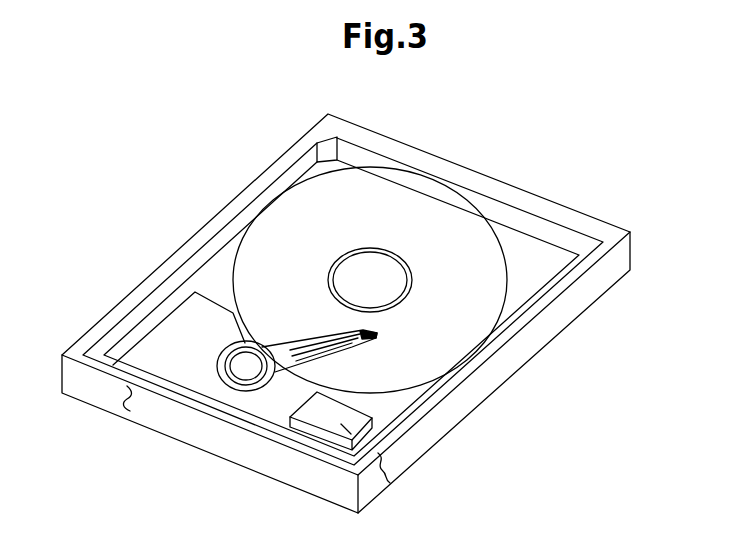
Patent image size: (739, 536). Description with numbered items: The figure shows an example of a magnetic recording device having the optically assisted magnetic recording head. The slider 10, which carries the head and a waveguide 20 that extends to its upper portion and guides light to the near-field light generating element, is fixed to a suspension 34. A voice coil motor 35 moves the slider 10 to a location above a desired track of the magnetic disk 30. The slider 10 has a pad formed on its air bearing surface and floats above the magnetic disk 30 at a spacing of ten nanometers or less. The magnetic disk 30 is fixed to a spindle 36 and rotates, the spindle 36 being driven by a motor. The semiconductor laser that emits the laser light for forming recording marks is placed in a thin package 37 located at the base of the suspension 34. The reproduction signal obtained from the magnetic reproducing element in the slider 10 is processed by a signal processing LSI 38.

The slider 10 is at (377, 333).
The waveguide 20 is at (297, 343).
The magnetic disk 30 is at (370, 280).
The suspension 34 is at (363, 440).
The voice coil motor 35 is at (165, 362).
The spindle 36 is at (383, 265).
The thin package 37 is at (287, 368).
The signal processing LSI 38 is at (388, 483).